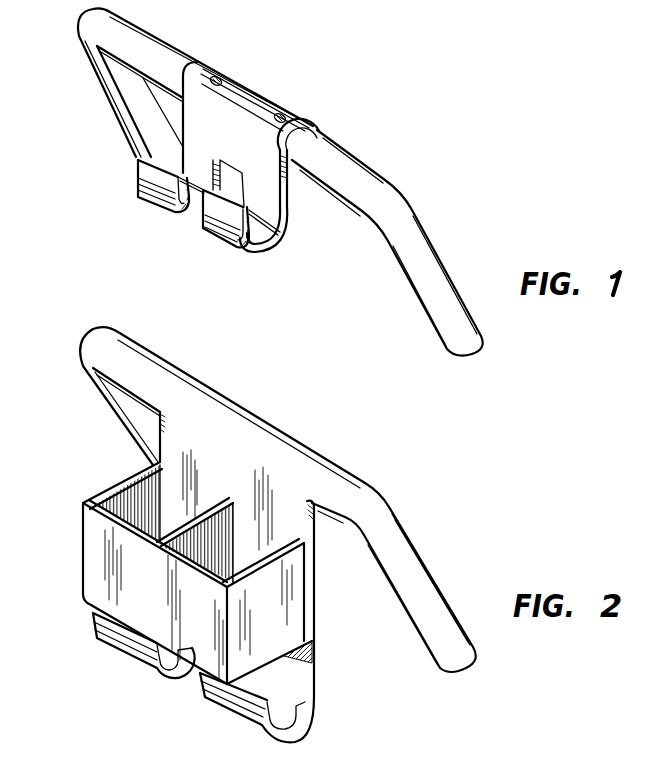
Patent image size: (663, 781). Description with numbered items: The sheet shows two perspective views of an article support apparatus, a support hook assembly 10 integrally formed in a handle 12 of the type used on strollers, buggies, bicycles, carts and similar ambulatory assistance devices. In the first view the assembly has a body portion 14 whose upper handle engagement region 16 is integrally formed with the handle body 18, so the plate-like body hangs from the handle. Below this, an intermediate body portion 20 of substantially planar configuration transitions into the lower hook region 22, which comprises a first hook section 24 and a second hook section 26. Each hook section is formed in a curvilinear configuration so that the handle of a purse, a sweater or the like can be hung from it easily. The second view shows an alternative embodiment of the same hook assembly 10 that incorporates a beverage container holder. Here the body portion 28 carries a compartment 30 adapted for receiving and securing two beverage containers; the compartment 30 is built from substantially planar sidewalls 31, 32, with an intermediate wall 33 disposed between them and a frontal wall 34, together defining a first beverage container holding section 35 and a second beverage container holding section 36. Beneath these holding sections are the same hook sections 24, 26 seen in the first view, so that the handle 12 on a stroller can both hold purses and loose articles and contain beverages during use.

In FIG. 1, the support hook assembly 10 is at (273, 179).
In FIG. 2, the support hook assembly 10 is at (254, 540).
In FIG. 1, the handle 12 is at (363, 177).
In FIG. 2, the handle 12 is at (427, 580).
In FIG. 1, the body portion 14 is at (290, 200).
In FIG. 1, the upper handle engagement region 16 is at (230, 88).
In FIG. 1, the handle body 18 is at (153, 44).
In FIG. 1, the intermediate body portion 20 is at (193, 130).
In FIG. 1, the lower hook region 22 is at (165, 219).
In FIG. 1, the first hook section 24 is at (140, 180).
In FIG. 2, the first hook section 24 is at (128, 650).
In FIG. 1, the second hook section 26 is at (214, 219).
In FIG. 2, the second hook section 26 is at (243, 720).
In FIG. 2, the body portion 28 is at (317, 627).
In FIG. 2, the compartment 30 is at (198, 558).
In FIG. 2, the sidewall 31 is at (100, 493).
In FIG. 2, the sidewall 32 is at (303, 603).
In FIG. 2, the intermediate wall 33 is at (210, 523).
In FIG. 2, the frontal wall 34 is at (93, 597).
In FIG. 2, the first beverage container holding section 35 is at (163, 510).
In FIG. 2, the second beverage container holding section 36 is at (277, 507).